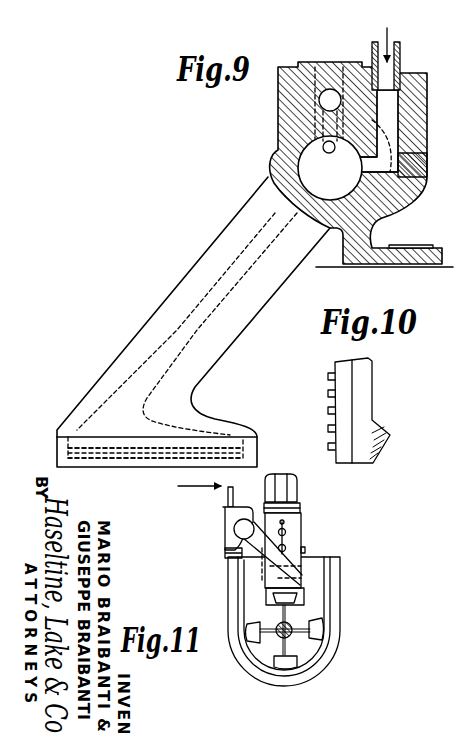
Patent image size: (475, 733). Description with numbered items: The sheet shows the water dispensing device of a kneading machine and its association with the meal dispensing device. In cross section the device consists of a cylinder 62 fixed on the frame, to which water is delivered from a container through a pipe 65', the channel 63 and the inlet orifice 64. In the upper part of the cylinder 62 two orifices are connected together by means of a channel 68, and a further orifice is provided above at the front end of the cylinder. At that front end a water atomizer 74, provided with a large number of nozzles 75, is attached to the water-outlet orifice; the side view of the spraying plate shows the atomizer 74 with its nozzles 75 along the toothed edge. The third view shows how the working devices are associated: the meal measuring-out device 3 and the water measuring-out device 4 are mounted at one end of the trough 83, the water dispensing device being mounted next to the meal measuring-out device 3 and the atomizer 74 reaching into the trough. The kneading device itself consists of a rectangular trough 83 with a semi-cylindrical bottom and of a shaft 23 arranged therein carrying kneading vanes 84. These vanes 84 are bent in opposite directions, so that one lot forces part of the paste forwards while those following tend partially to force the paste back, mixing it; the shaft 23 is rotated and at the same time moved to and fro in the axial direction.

In FIG. 9, the cylinder 62 is at (284, 123).
In FIG. 9, the channel 63 is at (388, 100).
In FIG. 9, the inlet orifice 64 is at (360, 174).
In FIG. 9, the pipe 65' is at (417, 59).
In FIG. 9, the channel 68 is at (318, 102).
In FIG. 9, the water atomizer 74 is at (227, 242).
In FIG. 10, the water atomizer 74 is at (360, 372).
In FIG. 11, the water atomizer 74 is at (266, 585).
In FIG. 9, the nozzles 75 is at (137, 454).
In FIG. 10, the nozzles 75 is at (389, 447).
In FIG. 11, the meal measuring-out device 3 is at (293, 503).
In FIG. 11, the water measuring-out device 4 is at (228, 518).
In FIG. 11, the shaft 23 is at (291, 637).
In FIG. 11, the trough 83 is at (328, 610).
In FIG. 11, the kneading vanes 84 is at (318, 633).